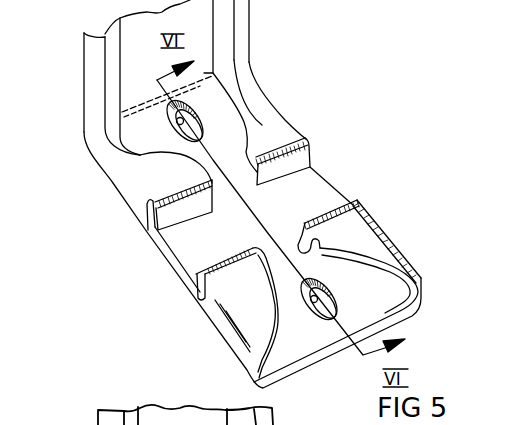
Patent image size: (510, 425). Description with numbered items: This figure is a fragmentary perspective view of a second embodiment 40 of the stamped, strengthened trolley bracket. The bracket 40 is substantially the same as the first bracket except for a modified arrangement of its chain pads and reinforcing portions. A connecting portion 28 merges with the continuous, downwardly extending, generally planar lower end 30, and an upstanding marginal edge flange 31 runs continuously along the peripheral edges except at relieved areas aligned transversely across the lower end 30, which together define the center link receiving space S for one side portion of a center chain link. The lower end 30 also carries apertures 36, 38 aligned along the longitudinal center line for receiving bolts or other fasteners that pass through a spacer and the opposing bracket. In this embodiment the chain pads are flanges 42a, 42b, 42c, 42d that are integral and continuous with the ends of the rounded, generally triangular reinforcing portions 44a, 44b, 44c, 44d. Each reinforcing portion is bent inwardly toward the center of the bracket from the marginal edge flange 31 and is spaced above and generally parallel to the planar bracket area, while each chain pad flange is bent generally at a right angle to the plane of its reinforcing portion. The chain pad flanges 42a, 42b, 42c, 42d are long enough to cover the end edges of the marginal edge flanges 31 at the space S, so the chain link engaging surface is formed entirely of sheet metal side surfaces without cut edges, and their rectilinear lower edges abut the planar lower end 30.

The connecting portion 28 is at (152, 76).
The lower end 30 is at (207, 100).
The marginal edge flange 31 is at (93, 120).
The aperture 36 is at (172, 120).
The aperture 38 is at (311, 310).
The second embodiment of trolley bracket 40 is at (327, 113).
The chain pad flange 42a is at (297, 157).
The chain pad flange 42b is at (183, 208).
The chain pad flange 42c is at (196, 274).
The chain pad flange 42d is at (304, 221).
The reinforcing portion 44a is at (273, 120).
The reinforcing portion 44b is at (160, 183).
The reinforcing portion 44c is at (259, 291).
The reinforcing portion 44d is at (360, 232).
The center link receiving space S is at (338, 180).